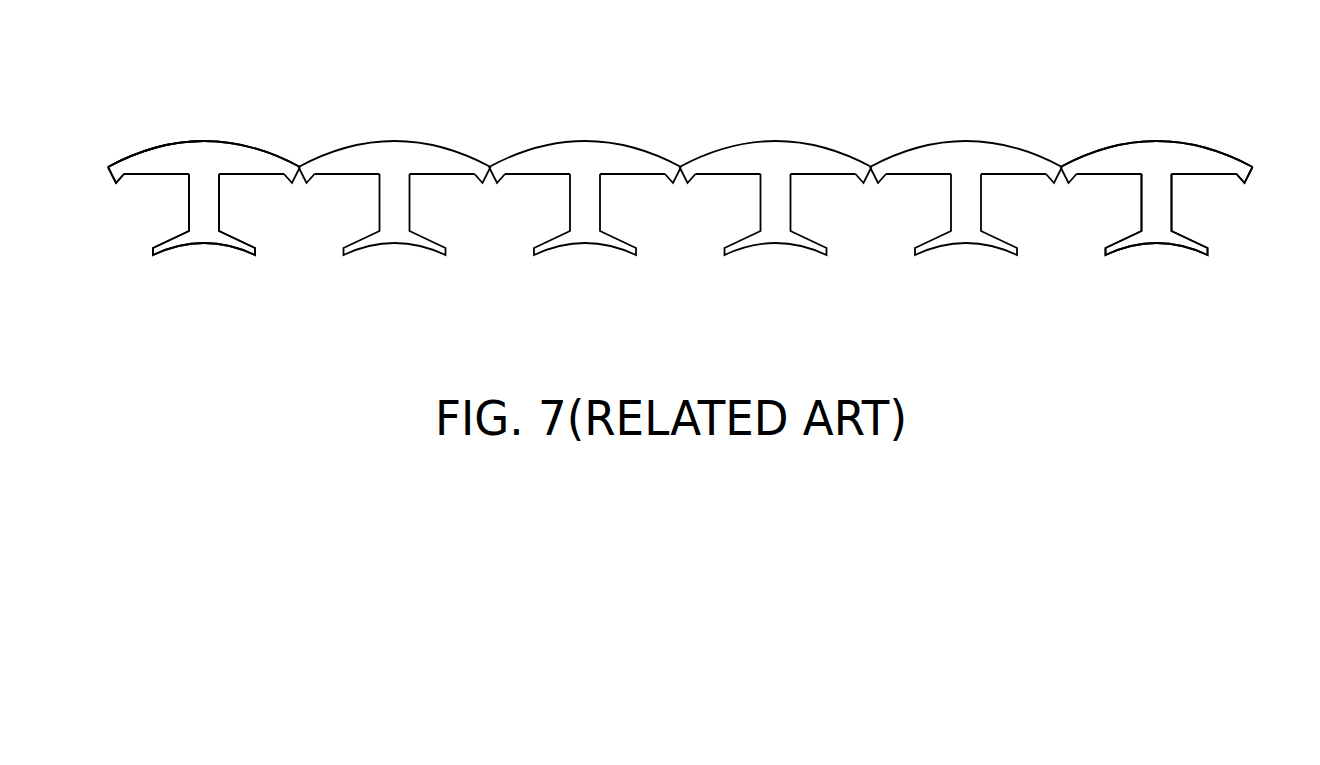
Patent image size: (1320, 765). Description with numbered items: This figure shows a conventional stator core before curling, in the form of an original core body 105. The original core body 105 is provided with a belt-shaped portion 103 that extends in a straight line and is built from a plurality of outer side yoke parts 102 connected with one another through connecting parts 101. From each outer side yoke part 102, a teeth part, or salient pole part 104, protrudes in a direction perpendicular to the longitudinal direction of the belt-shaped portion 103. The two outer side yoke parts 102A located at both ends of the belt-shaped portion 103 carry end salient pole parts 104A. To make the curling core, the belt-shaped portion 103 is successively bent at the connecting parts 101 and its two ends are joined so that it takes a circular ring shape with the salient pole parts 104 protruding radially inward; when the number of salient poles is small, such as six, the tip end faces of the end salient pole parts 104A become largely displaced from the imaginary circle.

The connecting part 101 is at (299, 165).
The outer side yoke part 102 is at (394, 139).
The outer side yoke part disposed at end of belt-shaped portion 102A is at (200, 138).
The belt-shaped portion 103 is at (142, 151).
The teeth part (salient pole part) 104 is at (395, 243).
The salient pole part connected with end outer side yoke part 104A is at (203, 243).
The original core body 105 is at (1242, 103).